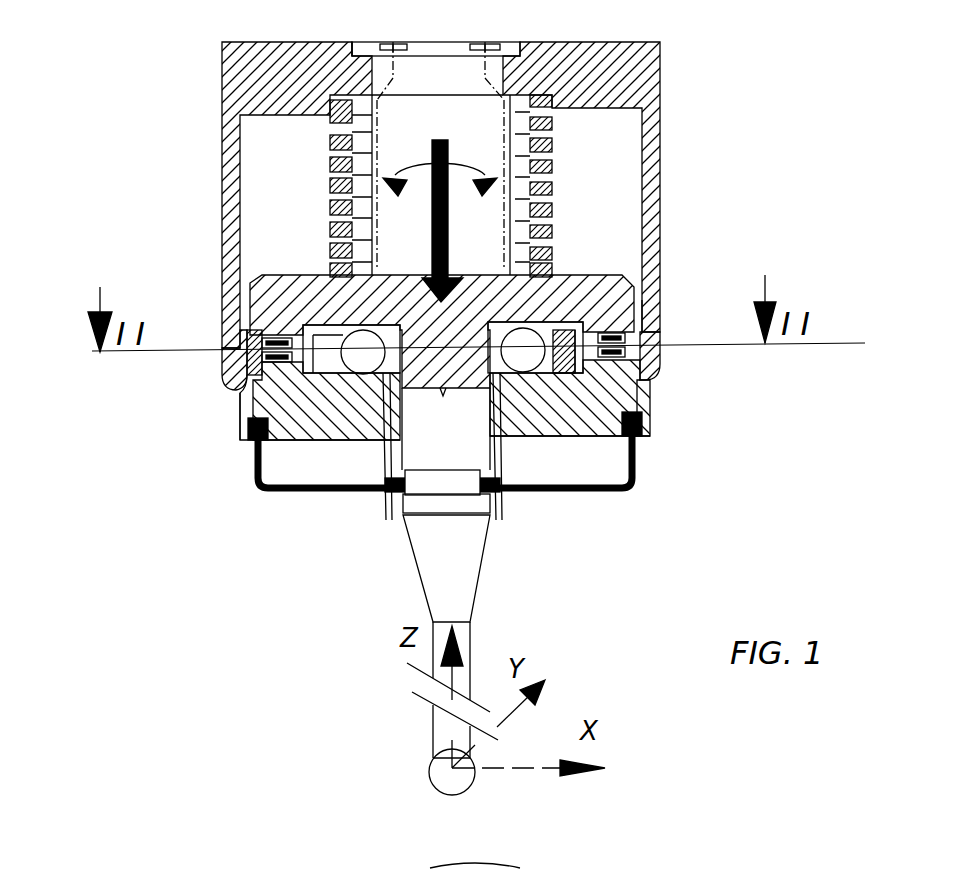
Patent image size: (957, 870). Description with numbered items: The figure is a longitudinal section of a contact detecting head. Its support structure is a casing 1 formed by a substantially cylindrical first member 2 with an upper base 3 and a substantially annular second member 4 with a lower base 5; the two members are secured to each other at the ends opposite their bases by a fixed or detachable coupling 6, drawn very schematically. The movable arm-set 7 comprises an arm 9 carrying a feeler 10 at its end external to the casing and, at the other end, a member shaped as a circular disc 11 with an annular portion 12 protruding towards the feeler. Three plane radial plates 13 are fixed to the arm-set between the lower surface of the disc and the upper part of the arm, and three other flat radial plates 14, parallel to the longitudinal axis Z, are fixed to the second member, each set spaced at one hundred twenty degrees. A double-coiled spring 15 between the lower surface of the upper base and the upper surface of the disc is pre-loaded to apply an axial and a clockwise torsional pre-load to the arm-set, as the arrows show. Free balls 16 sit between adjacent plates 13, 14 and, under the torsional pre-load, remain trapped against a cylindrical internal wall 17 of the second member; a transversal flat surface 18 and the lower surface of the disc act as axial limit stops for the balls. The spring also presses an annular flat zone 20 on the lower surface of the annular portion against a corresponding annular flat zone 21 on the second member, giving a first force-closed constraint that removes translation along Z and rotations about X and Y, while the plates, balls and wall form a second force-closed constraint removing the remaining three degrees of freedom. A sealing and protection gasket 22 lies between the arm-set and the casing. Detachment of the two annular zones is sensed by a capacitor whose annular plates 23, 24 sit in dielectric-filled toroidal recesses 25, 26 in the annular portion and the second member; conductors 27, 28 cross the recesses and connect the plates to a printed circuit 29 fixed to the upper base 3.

The casing 1 is at (170, 150).
The first member 2 is at (653, 130).
The upper base 3 is at (618, 50).
The second member 4 is at (658, 393).
The lower base 5 is at (567, 430).
The coupling 6 is at (675, 392).
The movable arm-set 7 is at (378, 582).
The arm 9 is at (457, 587).
The feeler 10 is at (470, 786).
The circular disc 11 is at (590, 268).
The annular portion 12 is at (552, 305).
The plates 13 is at (498, 470).
The plates 14 is at (387, 470).
The double-coiled spring 15 is at (548, 140).
The balls 16 is at (501, 385).
The cylindrical internal wall 17 is at (563, 268).
The transversal flat surface 18 is at (644, 398).
The annular flat zone 20 is at (620, 310).
The annular flat zone 21 is at (667, 365).
The sealing and protection gasket 22 is at (322, 492).
The annular plate 23 is at (265, 342).
The annular plate 24 is at (243, 386).
The toroidal recess 25 is at (262, 352).
The toroidal recess 26 is at (245, 362).
The conductor 27 is at (385, 82).
The conductor 28 is at (485, 77).
The printed circuit 29 is at (367, 50).